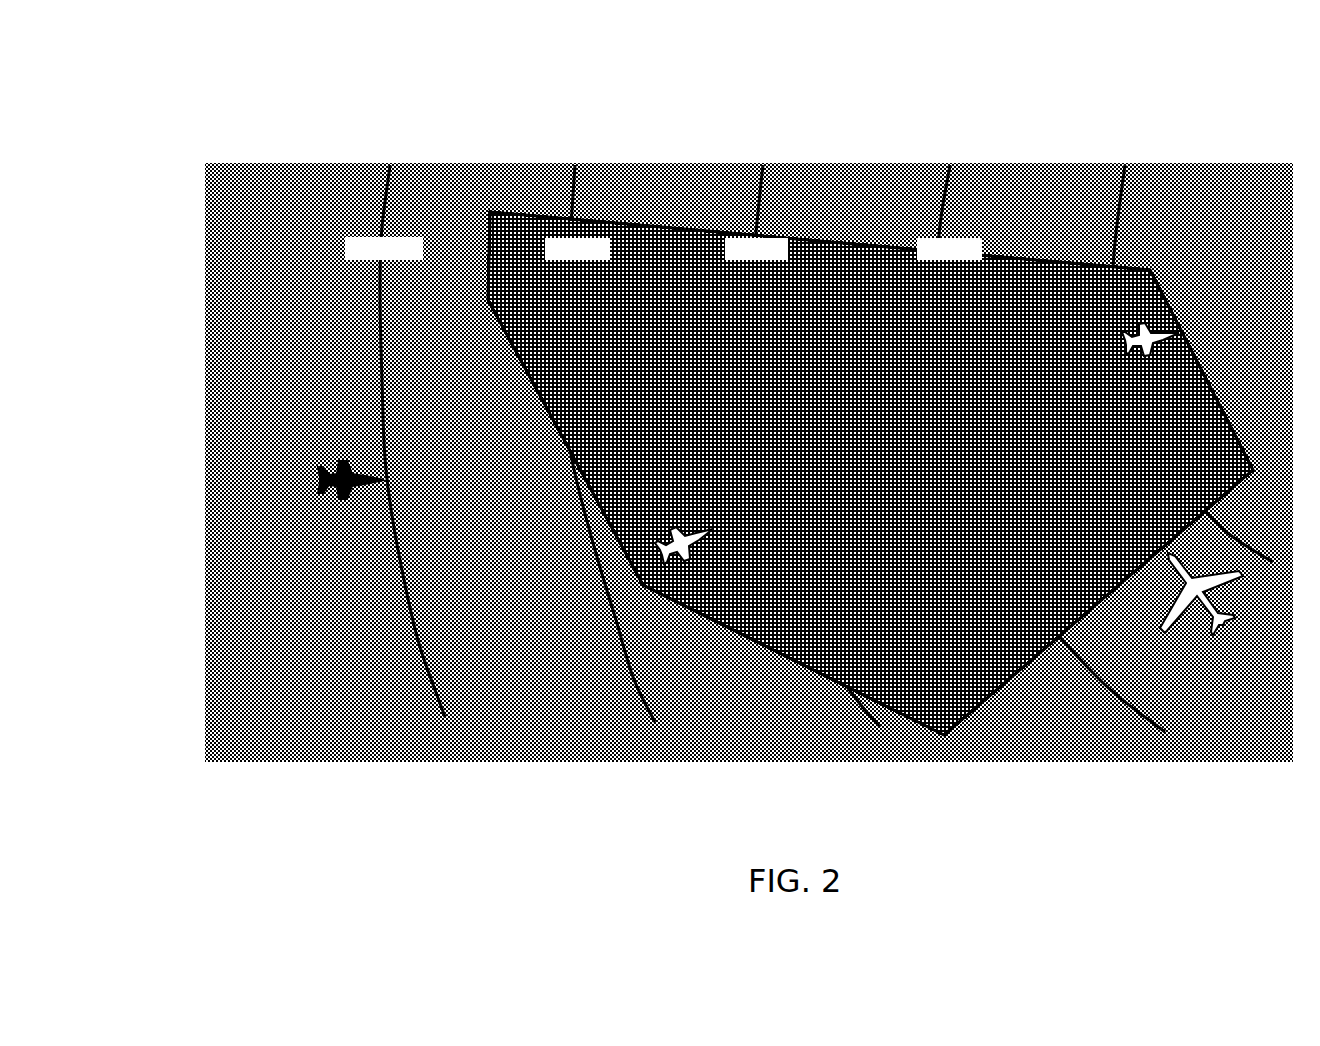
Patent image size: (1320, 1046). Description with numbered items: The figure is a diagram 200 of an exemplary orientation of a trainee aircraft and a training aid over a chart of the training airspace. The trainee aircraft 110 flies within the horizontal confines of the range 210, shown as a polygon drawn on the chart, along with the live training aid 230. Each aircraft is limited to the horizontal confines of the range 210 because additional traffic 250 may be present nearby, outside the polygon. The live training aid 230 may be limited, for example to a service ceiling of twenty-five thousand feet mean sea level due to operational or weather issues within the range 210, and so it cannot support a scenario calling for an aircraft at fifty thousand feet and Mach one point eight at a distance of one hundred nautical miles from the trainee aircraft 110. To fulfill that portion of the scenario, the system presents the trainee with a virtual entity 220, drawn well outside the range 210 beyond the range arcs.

The navigation display 200 is at (257, 132).
The range 210 is at (488, 262).
The virtual entity 220 is at (343, 460).
The live training aid 230 is at (670, 520).
The trainee aircraft 110 is at (1150, 318).
The additional traffic 250 is at (1185, 605).